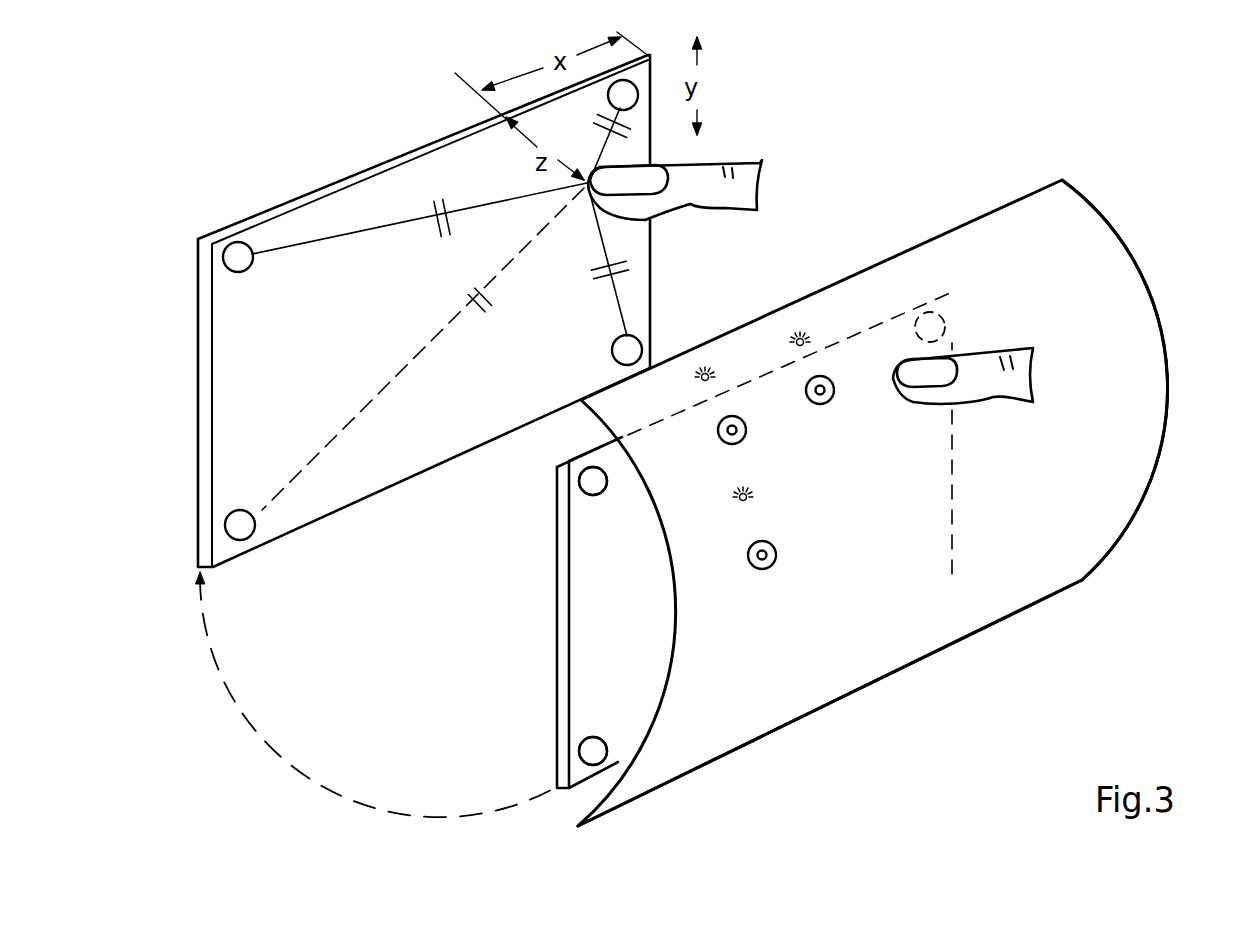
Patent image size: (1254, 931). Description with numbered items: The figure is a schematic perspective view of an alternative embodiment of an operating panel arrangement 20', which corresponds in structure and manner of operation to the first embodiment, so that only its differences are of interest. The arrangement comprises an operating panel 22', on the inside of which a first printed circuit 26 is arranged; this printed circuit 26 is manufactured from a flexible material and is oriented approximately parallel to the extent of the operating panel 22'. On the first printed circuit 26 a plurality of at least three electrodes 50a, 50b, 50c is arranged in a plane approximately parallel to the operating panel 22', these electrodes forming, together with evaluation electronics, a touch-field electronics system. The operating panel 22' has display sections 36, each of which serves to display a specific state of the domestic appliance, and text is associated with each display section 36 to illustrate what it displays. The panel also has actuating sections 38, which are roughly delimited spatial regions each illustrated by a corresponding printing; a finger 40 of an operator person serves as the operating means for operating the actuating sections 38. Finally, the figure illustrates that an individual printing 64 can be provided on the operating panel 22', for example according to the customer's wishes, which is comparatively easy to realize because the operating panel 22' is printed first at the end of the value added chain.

The operating panel arrangement 20' is at (1105, 313).
The operating panel 22' is at (901, 503).
The first printed circuit 26 is at (333, 207).
The display section 36 is at (803, 332).
The actuating section 38 is at (840, 383).
The finger 40 is at (737, 190).
The electrode 50a is at (581, 482).
The electrode 50b is at (559, 783).
The electrode 50c is at (952, 307).
The individual printing 64 is at (977, 597).